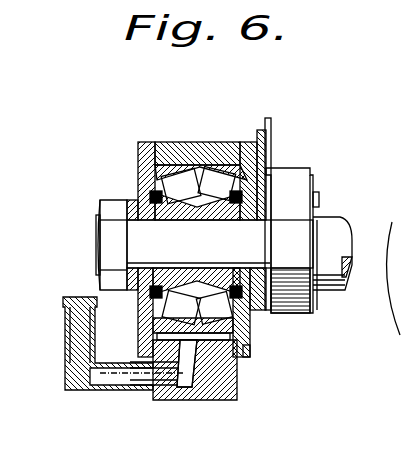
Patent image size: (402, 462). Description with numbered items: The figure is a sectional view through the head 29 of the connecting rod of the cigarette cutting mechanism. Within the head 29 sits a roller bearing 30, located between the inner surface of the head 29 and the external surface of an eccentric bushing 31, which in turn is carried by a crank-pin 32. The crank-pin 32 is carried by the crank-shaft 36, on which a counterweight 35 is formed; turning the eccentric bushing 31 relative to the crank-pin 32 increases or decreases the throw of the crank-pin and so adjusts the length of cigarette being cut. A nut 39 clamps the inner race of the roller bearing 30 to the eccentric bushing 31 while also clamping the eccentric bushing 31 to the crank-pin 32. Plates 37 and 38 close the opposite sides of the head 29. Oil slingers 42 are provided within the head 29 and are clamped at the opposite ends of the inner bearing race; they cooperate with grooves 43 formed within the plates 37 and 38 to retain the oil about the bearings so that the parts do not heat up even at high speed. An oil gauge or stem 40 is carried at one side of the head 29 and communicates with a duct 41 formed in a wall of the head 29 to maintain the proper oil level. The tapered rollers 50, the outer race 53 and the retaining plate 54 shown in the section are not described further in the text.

The head 29 is at (178, 140).
The upper tapered rollers 50 is at (210, 172).
The outer bearing race 53 is at (263, 140).
The retaining plate 54 is at (272, 123).
The oil slingers 42 is at (140, 189).
The eccentric bushing 31 is at (272, 262).
The nut 39 is at (117, 246).
The grooves 43 is at (158, 202).
The crank-pin 32 is at (220, 244).
The roller bearing 30 is at (166, 320).
The counterweight 35 is at (290, 302).
The crank-shaft 36 is at (346, 285).
The plate 38 is at (250, 357).
The oil gauge or stem 40 is at (102, 389).
The duct 41 is at (237, 390).
The plate 37 is at (158, 365).